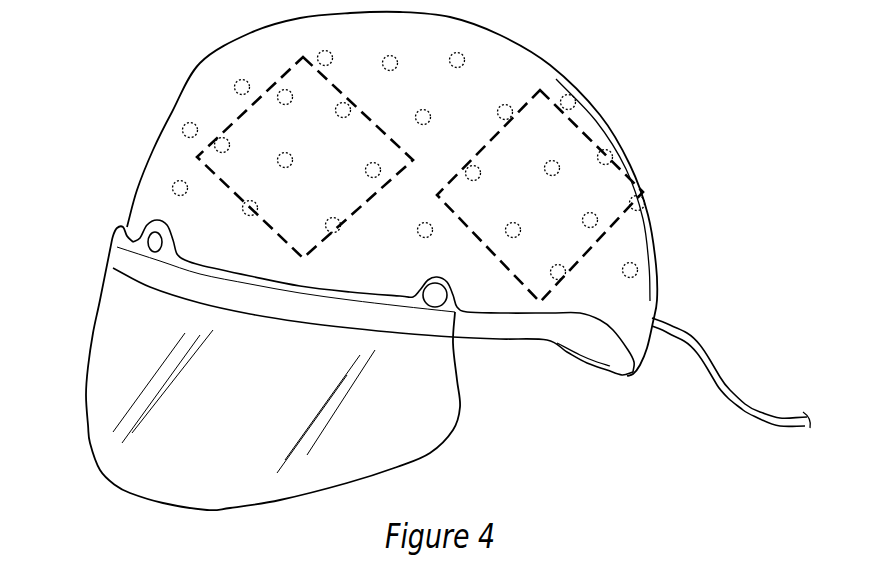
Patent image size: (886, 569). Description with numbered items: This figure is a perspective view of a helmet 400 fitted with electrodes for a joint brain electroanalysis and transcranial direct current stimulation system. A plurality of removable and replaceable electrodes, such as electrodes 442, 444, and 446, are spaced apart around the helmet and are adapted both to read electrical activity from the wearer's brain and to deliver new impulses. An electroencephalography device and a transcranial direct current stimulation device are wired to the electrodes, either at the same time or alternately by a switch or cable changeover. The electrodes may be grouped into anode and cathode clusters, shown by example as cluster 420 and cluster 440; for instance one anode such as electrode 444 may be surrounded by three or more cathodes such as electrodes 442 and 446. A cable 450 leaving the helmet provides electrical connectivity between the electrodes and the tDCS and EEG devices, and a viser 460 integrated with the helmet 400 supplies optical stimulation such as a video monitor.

The helmet 400 is at (502, 68).
The cluster 420 is at (197, 160).
The cluster 440 is at (580, 133).
The electrode 442 is at (505, 110).
The electrode 444 is at (555, 170).
The electrode 446 is at (513, 228).
The cable 450 is at (753, 408).
The viser 460 is at (150, 483).